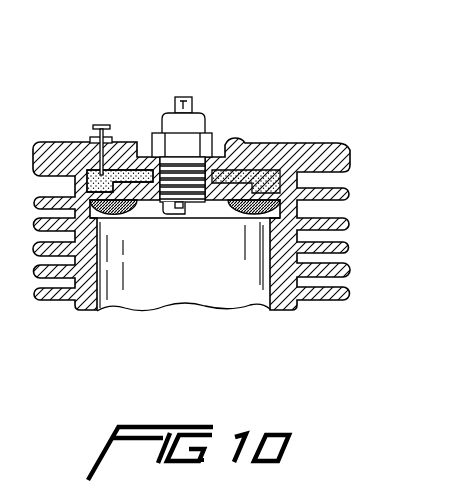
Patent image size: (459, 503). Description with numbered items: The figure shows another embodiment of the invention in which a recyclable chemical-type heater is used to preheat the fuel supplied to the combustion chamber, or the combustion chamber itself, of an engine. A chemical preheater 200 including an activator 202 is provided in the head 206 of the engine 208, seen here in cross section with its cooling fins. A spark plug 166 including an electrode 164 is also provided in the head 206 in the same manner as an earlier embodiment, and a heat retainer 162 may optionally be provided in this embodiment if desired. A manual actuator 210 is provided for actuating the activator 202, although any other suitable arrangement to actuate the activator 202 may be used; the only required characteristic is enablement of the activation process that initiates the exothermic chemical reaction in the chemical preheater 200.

The heat retainer 162 is at (143, 218).
The electrode 164 is at (176, 221).
The spark plug 166 is at (203, 113).
The chemical preheater 200 is at (257, 175).
The activator 202 is at (87, 160).
The head 206 is at (345, 143).
The engine 208 is at (325, 318).
The manual actuator 210 is at (101, 125).